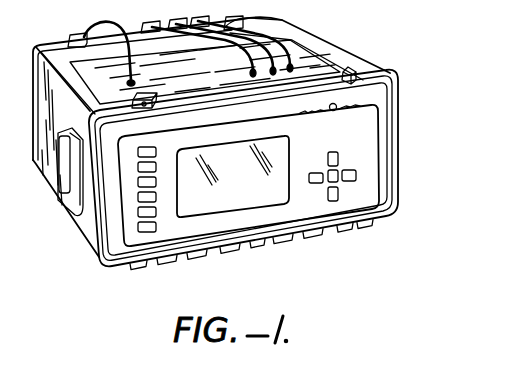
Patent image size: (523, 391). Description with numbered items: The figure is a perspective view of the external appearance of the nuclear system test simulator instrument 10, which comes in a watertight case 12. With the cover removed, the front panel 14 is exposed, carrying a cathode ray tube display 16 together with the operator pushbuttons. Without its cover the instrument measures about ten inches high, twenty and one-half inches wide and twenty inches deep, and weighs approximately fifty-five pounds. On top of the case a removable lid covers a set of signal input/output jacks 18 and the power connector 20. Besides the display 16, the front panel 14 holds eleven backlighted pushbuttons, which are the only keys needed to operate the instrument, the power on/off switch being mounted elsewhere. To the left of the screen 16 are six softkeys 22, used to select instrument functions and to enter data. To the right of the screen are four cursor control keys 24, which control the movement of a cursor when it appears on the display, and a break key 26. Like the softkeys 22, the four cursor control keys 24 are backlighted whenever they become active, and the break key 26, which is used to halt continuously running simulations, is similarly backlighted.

The nuclear system test simulator instrument 10 is at (424, 67).
The watertight case 12 is at (358, 72).
The front panel 14 is at (377, 136).
The cathode ray tube display 16 is at (253, 190).
The signal input/output jacks 18 is at (285, 38).
The power connector 20 is at (102, 29).
The softkeys 22 is at (147, 227).
The cursor control keys 24 is at (336, 200).
The break key 26 is at (340, 182).